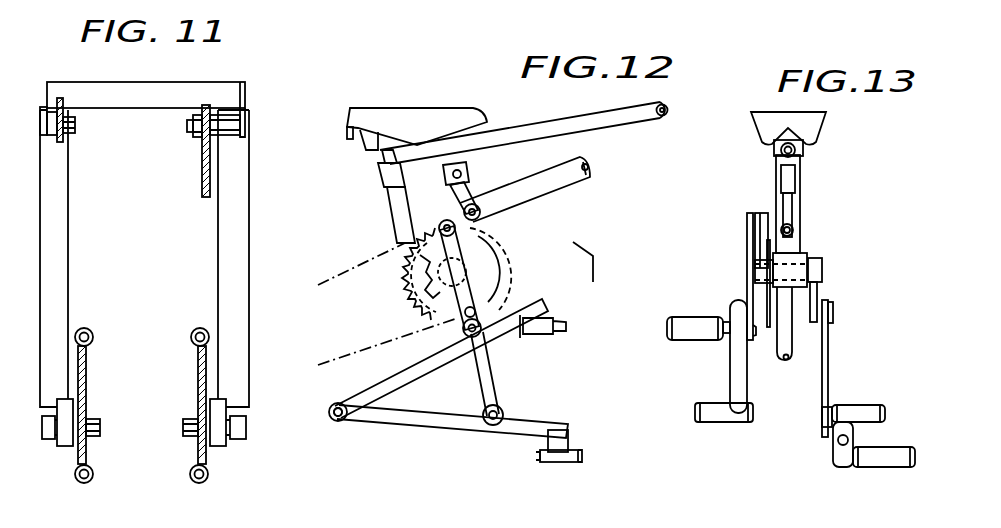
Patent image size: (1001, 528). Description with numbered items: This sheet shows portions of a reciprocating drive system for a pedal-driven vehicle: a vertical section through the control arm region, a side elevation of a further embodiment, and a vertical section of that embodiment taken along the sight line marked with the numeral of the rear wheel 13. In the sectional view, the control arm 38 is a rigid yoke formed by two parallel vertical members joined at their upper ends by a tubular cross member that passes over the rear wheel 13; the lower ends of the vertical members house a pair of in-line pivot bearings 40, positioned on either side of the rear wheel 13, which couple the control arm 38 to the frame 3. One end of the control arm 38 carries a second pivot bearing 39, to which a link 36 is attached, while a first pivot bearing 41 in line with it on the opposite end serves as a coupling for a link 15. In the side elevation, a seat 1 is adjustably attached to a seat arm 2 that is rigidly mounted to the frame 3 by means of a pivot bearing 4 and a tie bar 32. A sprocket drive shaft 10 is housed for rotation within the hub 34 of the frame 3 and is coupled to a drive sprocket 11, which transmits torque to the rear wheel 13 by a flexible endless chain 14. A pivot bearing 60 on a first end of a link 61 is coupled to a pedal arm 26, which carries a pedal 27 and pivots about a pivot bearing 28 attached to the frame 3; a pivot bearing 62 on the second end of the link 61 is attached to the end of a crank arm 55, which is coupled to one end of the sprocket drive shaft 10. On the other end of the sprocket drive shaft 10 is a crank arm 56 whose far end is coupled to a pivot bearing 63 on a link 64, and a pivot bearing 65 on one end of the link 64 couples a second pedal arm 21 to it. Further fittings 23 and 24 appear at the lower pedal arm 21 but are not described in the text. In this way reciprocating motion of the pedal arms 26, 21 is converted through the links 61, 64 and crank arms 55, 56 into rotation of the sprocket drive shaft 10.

In FIG. 12, the seat 1 is at (379, 100).
In FIG. 13, the seat 1 is at (820, 108).
In FIG. 12, the seat arm 2 is at (568, 118).
In FIG. 13, the seat arm 2 is at (801, 156).
In FIG. 11, the frame 3 is at (87, 345).
In FIG. 12, the frame 3 is at (556, 193).
In FIG. 13, the frame 3 is at (797, 226).
In FIG. 12, the pivot bearing 4 is at (662, 117).
In FIG. 13, the sprocket drive shaft 10 is at (808, 250).
In FIG. 12, the drive sprocket 11 is at (398, 283).
In FIG. 13, the drive sprocket 11 is at (767, 213).
In FIG. 12, the rear wheel 13 is at (500, 80).
In FIG. 12, the flexible endless chain 14 is at (348, 270).
In FIG. 11, the link 15 is at (205, 150).
In FIG. 12, the pedal arm 21 is at (457, 437).
In FIG. 13, the pedal arm 21 is at (845, 405).
In FIG. 12, the bracket 23 is at (542, 456).
In FIG. 13, the bracket 23 is at (843, 444).
In FIG. 12, the pedal 24 is at (334, 419).
In FIG. 13, the pedal 24 is at (883, 406).
In FIG. 12, the pedal arm 26 is at (469, 345).
In FIG. 13, the pedal arm 26 is at (729, 356).
In FIG. 12, the pedal 27 is at (565, 334).
In FIG. 13, the pedal 27 is at (704, 283).
In FIG. 12, the pivot bearing 28 is at (338, 412).
In FIG. 13, the pivot bearing 28 is at (697, 404).
In FIG. 12, the tie bar 32 is at (481, 180).
In FIG. 13, the tie bar 32 is at (800, 197).
In FIG. 13, the hub 34 is at (800, 250).
In FIG. 11, the link 36 is at (66, 138).
In FIG. 11, the control arm 38 is at (145, 82).
In FIG. 11, the pivot bearing 39 is at (48, 138).
In FIG. 11, the in-line pivot bearings 40 is at (60, 447).
In FIG. 11, the first pivot bearing 41 is at (212, 136).
In FIG. 12, the crank arm 55 is at (462, 236).
In FIG. 13, the crank arm 55 is at (758, 213).
In FIG. 13, the crank arm 56 is at (820, 300).
In FIG. 12, the pivot bearing 60 is at (464, 327).
In FIG. 13, the pivot bearing 60 is at (750, 335).
In FIG. 12, the link 61 is at (438, 230).
In FIG. 13, the link 61 is at (747, 247).
In FIG. 12, the pivot bearing 62 is at (452, 207).
In FIG. 13, the pivot bearing 62 is at (747, 217).
In FIG. 13, the pivot bearing 63 is at (832, 322).
In FIG. 12, the link 64 is at (497, 372).
In FIG. 13, the link 64 is at (829, 378).
In FIG. 12, the pivot bearing 65 is at (504, 414).
In FIG. 13, the pivot bearing 65 is at (822, 411).